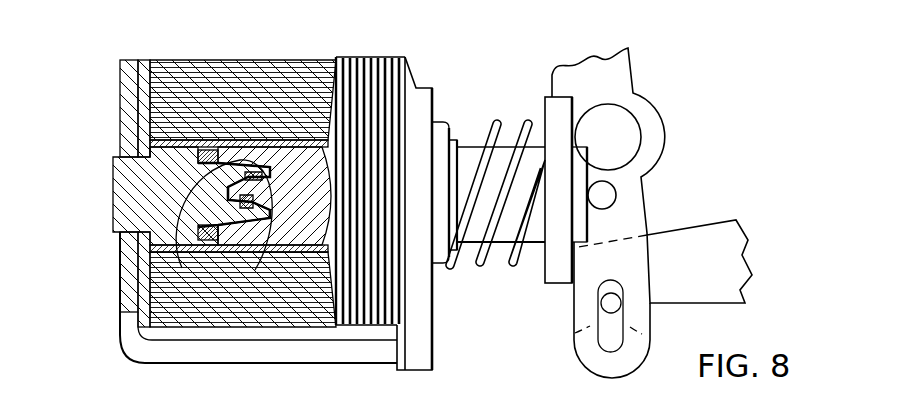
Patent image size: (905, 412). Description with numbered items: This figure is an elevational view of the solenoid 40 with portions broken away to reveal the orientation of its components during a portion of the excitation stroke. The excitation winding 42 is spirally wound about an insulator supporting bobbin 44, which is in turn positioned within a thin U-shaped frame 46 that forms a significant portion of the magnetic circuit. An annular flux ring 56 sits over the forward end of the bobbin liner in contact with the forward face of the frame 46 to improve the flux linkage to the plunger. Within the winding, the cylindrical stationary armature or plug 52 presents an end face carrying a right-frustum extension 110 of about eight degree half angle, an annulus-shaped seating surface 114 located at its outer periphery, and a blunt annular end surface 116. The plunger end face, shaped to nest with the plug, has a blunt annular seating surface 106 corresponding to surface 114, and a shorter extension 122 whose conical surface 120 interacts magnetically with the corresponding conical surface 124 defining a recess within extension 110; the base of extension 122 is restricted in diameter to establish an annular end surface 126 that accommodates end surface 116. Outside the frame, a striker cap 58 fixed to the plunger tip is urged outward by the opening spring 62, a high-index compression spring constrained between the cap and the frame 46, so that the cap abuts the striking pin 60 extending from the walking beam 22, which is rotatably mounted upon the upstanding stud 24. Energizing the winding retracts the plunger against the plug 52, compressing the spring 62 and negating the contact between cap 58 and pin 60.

The solenoid device 40 is at (78, 53).
The U-shaped frame 46 is at (127, 70).
The insulator supporting bobbin 44 is at (145, 63).
The excitation winding 42 is at (243, 63).
The stationary armature or plug 52 is at (101, 208).
The annulus-shaped seating surface 114 is at (191, 162).
The annulus shaped seating surface 106 is at (207, 157).
The conical surface 124 is at (248, 172).
The annular shaped end surface 126 is at (280, 146).
The conical surface 120 is at (277, 180).
The extension 122 is at (270, 197).
The extension 110 is at (155, 276).
The blunt annulus shaped end surface 116 is at (280, 278).
The annular flux ring 56 is at (438, 267).
The opening spring 62 is at (521, 262).
The striker cap 58 is at (552, 100).
The upstanding stud 24 is at (615, 138).
The striking pin 60 is at (617, 202).
The walking beam 22 is at (646, 227).